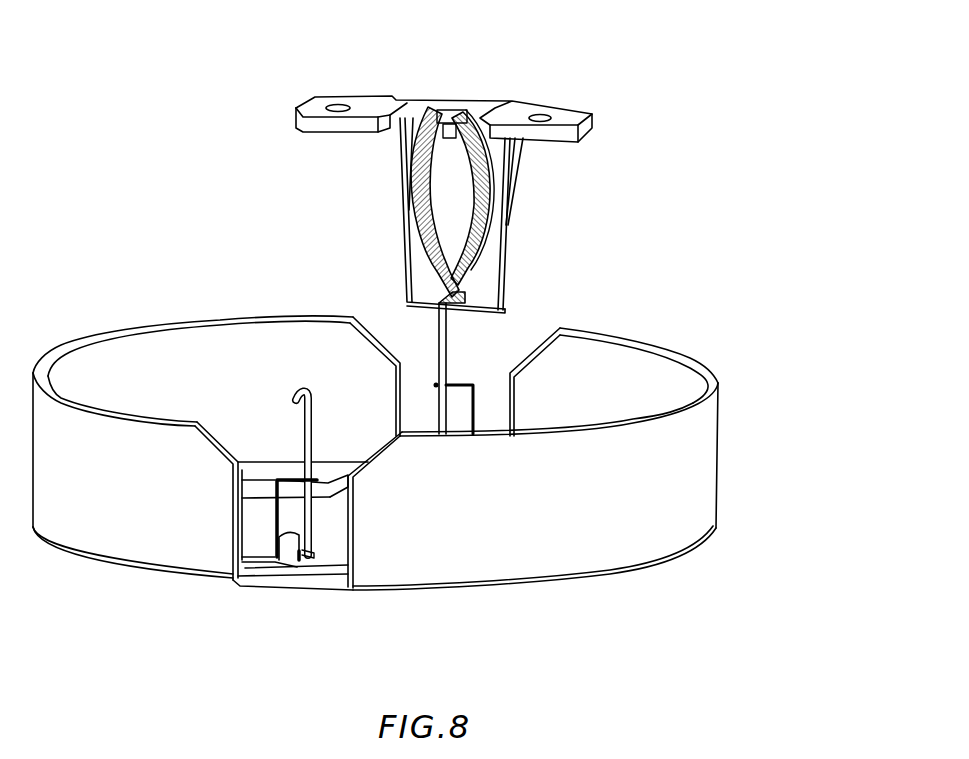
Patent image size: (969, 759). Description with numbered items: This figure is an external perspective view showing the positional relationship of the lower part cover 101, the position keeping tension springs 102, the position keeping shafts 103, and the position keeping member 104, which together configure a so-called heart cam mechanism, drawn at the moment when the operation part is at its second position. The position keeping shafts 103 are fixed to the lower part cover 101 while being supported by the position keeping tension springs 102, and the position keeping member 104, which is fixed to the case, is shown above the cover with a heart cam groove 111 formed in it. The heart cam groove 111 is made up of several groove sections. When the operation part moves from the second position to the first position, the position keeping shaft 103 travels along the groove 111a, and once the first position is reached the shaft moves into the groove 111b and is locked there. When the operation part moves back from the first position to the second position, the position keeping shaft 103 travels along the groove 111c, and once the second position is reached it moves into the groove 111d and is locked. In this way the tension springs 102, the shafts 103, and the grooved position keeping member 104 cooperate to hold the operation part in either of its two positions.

The lower part cover 101 is at (698, 487).
The position keeping tension spring 102 is at (462, 383).
The position keeping shaft 103 is at (439, 340).
The position keeping member 104 is at (570, 118).
The heart cam groove 111 is at (462, 118).
The groove 111a is at (490, 228).
The groove 111b is at (451, 104).
The groove 111c is at (424, 230).
The groove 111d is at (463, 298).